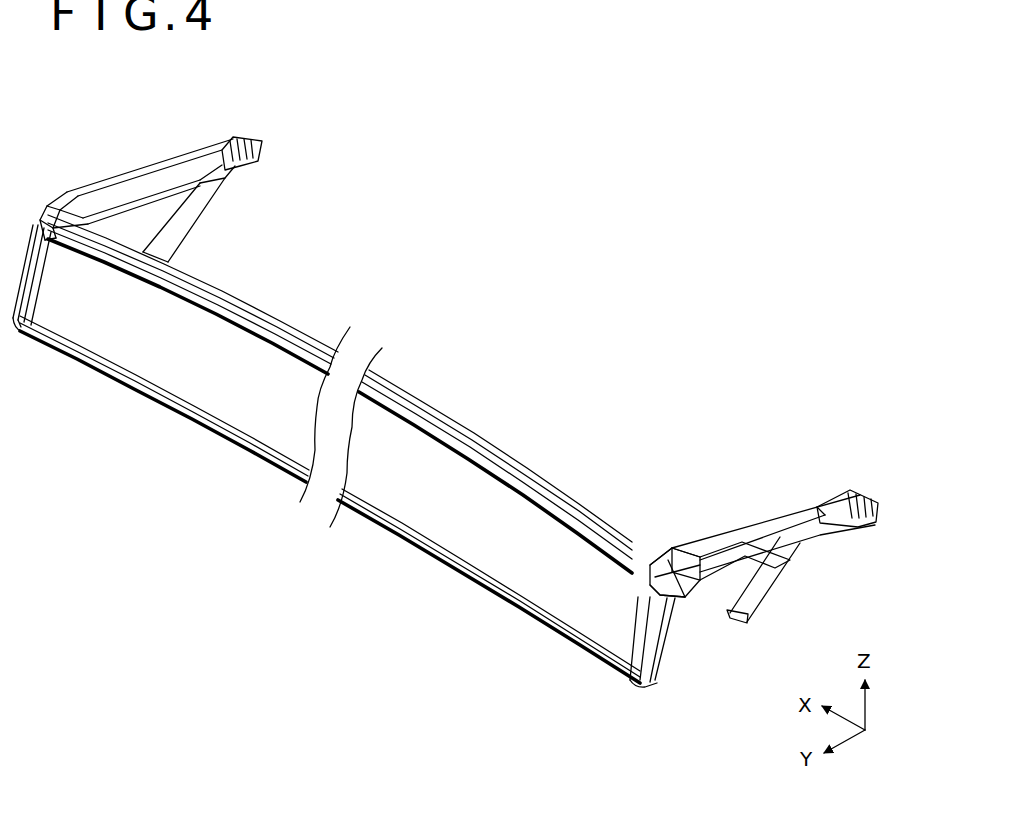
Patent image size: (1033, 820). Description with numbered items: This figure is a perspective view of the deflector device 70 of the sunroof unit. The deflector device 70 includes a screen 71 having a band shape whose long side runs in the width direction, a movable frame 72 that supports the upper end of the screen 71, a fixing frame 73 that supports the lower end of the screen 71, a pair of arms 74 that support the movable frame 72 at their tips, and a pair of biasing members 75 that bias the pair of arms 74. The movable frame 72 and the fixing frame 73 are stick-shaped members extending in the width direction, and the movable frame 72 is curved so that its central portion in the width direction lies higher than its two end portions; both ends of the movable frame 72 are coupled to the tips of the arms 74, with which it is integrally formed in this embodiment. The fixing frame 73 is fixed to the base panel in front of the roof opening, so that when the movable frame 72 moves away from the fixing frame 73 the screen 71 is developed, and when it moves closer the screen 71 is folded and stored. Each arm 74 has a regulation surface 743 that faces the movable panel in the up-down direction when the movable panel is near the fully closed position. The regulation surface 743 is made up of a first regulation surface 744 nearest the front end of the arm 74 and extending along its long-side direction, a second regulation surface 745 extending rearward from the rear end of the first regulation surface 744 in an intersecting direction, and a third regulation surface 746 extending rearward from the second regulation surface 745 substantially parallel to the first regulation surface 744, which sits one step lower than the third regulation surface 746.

The deflector device 70 is at (71, 124).
The screen 71 is at (125, 352).
The movable frame 72 is at (502, 453).
The fixing frame 73 is at (498, 583).
The arm 74 is at (134, 170).
The biasing member 75 is at (183, 211).
The regulation surface 743 is at (707, 563).
The first regulation surface 744 is at (678, 595).
The second regulation surface 745 is at (667, 550).
The third regulation surface 746 is at (747, 537).